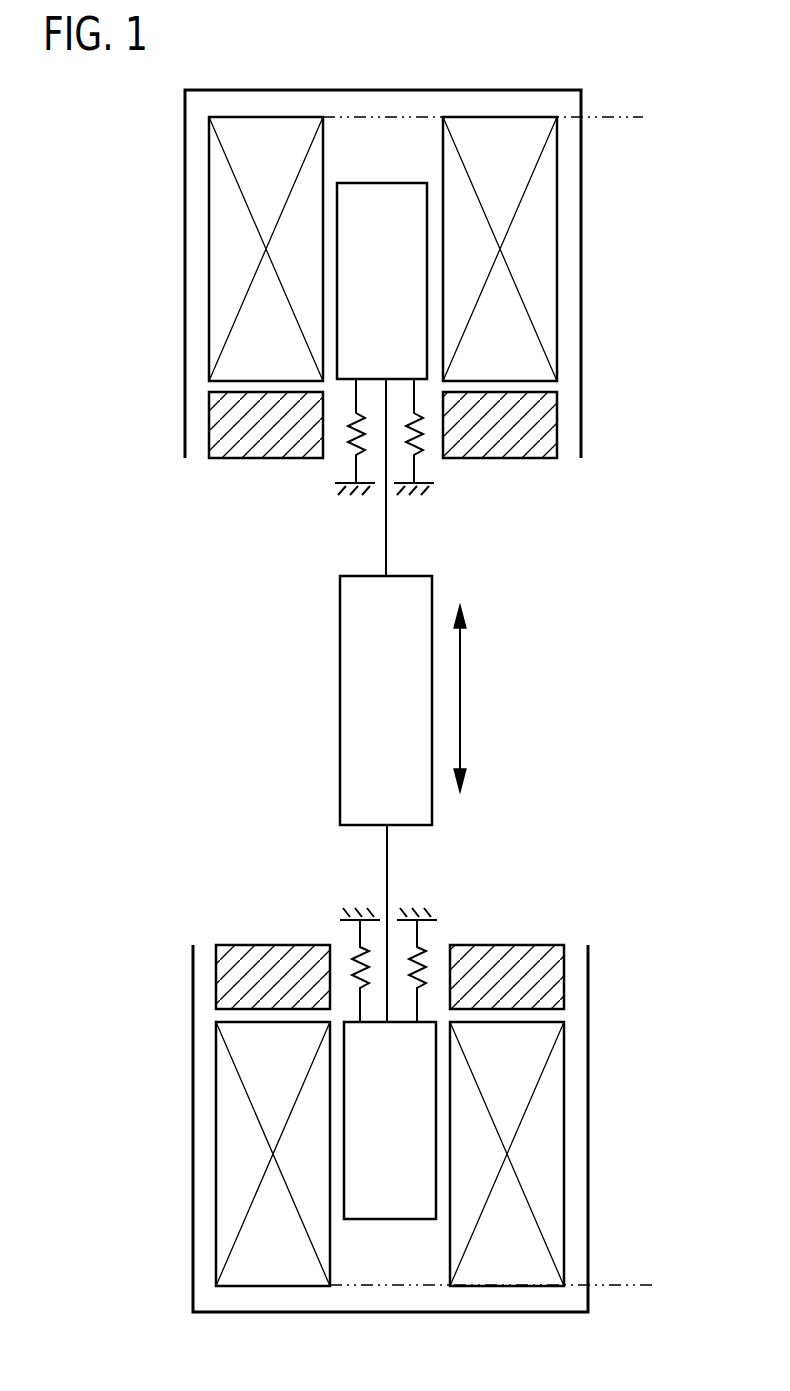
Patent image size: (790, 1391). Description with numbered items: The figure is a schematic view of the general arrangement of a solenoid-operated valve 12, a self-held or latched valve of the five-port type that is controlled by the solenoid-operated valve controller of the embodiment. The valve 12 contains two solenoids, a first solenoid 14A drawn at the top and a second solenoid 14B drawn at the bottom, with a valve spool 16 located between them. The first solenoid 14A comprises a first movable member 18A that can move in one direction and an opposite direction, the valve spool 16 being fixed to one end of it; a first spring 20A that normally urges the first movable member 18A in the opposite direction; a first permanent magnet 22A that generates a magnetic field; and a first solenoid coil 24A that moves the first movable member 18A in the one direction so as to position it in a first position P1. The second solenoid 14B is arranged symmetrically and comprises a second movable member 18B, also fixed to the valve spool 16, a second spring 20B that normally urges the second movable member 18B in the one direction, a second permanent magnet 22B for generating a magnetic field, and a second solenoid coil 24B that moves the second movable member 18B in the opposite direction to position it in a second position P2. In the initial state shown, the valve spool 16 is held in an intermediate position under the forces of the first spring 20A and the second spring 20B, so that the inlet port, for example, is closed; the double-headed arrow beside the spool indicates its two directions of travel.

The solenoid-operated valve 12 is at (92, 126).
The first solenoid 14A is at (482, 84).
The second solenoid 14B is at (493, 1316).
The valve spool 16 is at (372, 631).
The first movable member 18A is at (378, 257).
The second movable member 18B is at (385, 1145).
The first spring 20A is at (426, 448).
The second spring 20B is at (428, 955).
The first permanent magnet 22A is at (532, 424).
The second permanent magnet 22B is at (533, 975).
The first solenoid coil 24A is at (538, 260).
The second solenoid coil 24B is at (545, 1140).
The first position P1 is at (502, 112).
The second position P2 is at (510, 1280).